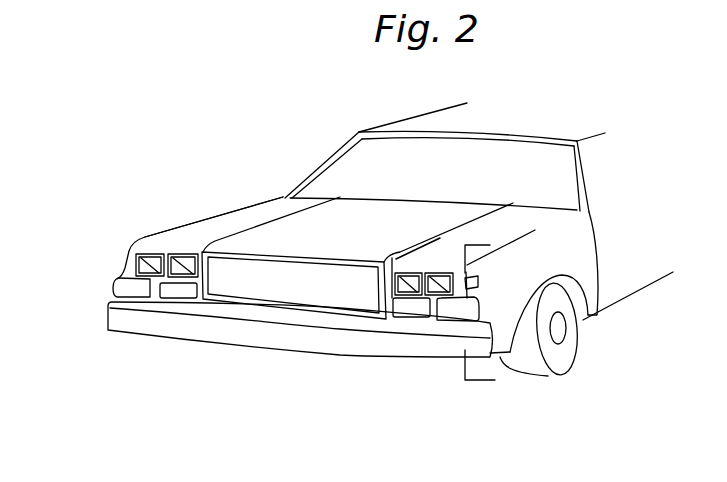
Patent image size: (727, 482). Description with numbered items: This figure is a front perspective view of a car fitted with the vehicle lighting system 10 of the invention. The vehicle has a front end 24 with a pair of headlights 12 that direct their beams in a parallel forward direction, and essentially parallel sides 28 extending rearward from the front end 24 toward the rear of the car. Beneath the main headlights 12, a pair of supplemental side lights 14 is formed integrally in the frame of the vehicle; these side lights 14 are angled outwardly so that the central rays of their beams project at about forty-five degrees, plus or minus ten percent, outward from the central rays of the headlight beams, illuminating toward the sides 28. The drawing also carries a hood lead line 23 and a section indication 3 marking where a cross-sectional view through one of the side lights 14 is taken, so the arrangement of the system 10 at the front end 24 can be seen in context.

The vehicle lighting system 10 is at (492, 293).
The headlights 12 is at (417, 296).
The supplemental side lights 14 is at (112, 285).
The hood 23 is at (215, 217).
The front end 24 is at (242, 347).
The sides 28 is at (106, 316).
The section line 3- 3 is at (500, 310).